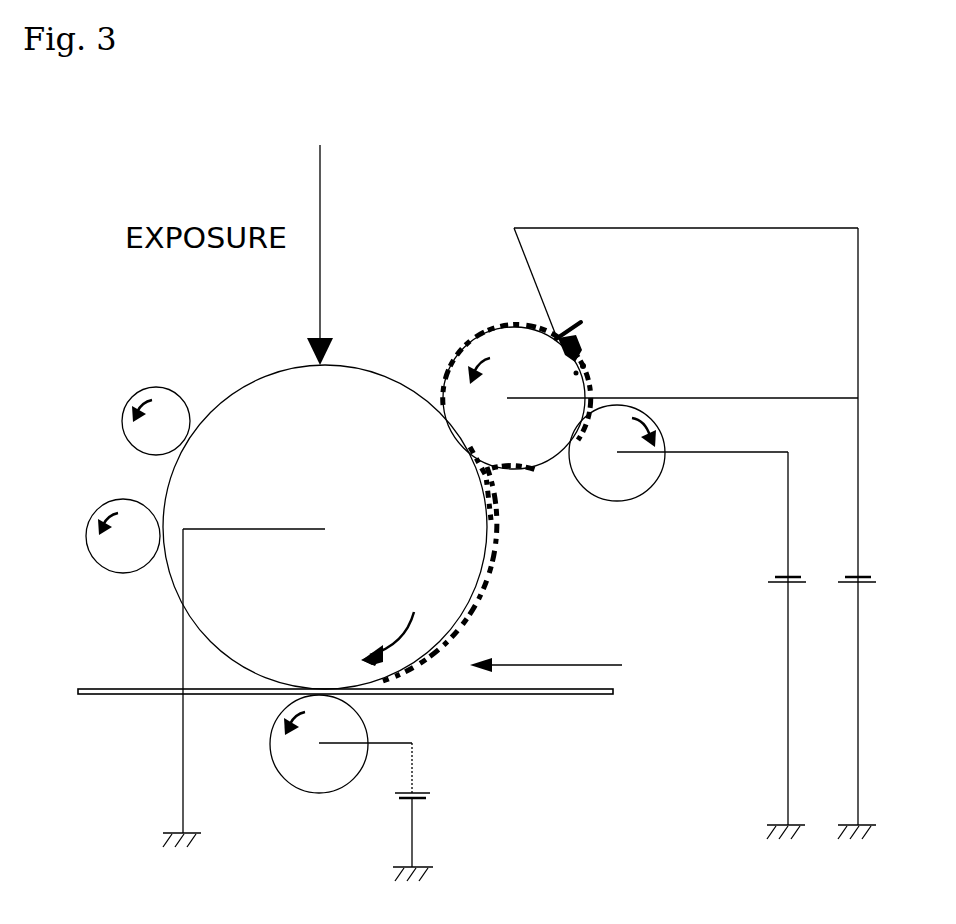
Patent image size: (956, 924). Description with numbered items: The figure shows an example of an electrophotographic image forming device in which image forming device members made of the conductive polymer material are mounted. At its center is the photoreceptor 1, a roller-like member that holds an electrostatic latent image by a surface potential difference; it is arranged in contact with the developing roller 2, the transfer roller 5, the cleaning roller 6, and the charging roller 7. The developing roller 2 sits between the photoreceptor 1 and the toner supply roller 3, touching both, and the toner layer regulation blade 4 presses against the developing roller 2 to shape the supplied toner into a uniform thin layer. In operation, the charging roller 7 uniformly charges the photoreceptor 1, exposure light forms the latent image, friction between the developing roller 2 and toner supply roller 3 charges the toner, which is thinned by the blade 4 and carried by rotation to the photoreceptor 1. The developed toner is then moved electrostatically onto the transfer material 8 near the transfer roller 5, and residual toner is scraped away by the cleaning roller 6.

The photoreceptor 1 is at (435, 607).
The developing roller 2 is at (535, 452).
The toner supply roller 3 is at (628, 488).
The toner layer regulation blade 4 is at (584, 337).
The transfer roller 5 is at (320, 773).
The cleaning roller 6 is at (110, 560).
The charging roller 7 is at (136, 436).
The transfer material 8 is at (545, 695).